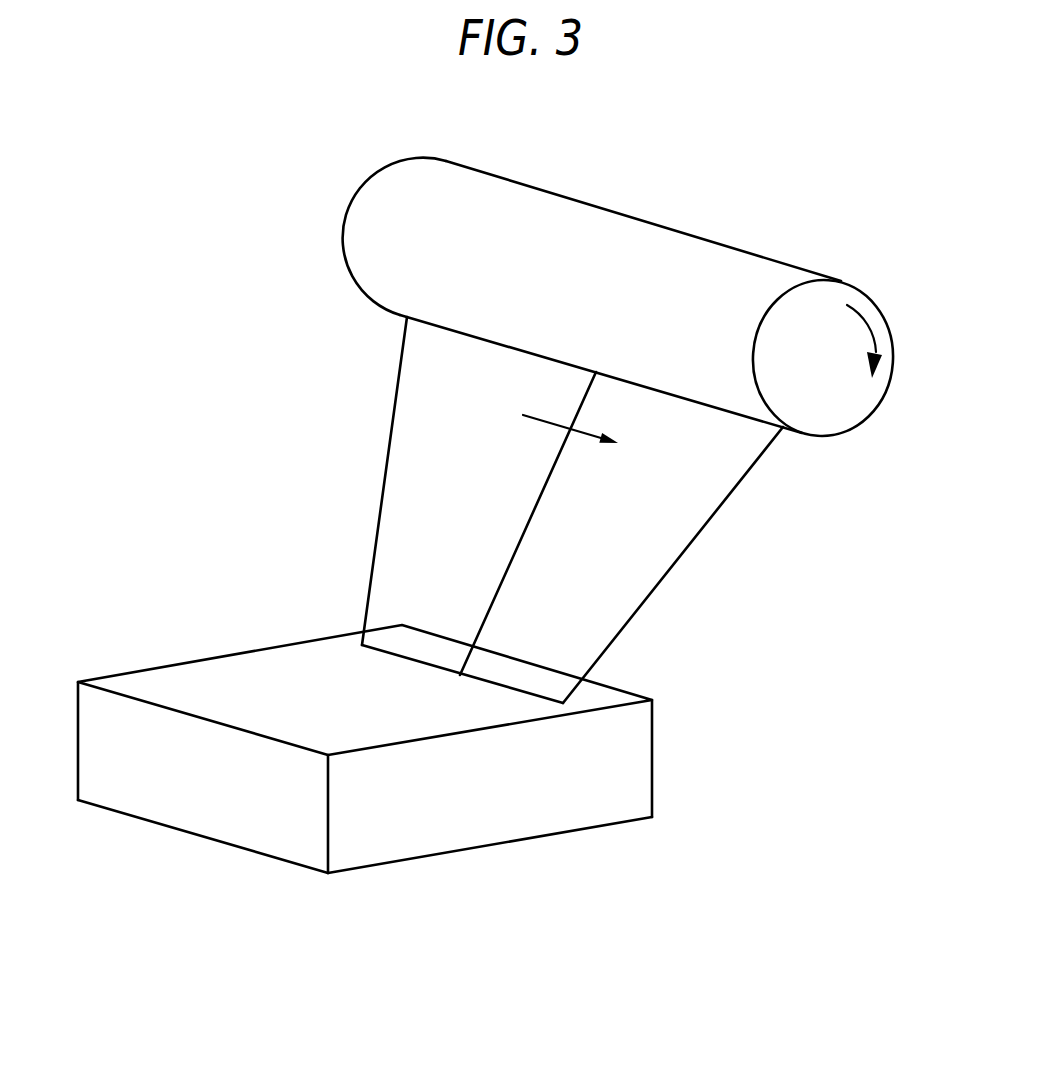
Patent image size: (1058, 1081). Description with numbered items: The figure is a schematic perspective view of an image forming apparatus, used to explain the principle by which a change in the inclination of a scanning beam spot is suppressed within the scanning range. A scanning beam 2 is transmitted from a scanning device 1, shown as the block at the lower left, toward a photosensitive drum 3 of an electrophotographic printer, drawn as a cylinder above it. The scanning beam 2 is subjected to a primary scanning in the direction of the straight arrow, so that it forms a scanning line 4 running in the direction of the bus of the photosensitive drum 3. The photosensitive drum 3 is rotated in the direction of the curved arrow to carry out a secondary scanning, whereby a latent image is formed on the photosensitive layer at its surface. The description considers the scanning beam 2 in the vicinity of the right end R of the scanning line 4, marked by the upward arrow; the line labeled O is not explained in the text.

The scanning device 1 is at (492, 833).
The scanning beam 2 is at (395, 427).
The photosensitive drum 3 is at (888, 322).
The scanning line 4 is at (680, 403).
The optical axis / center line O is at (550, 480).
The right end R is at (773, 478).